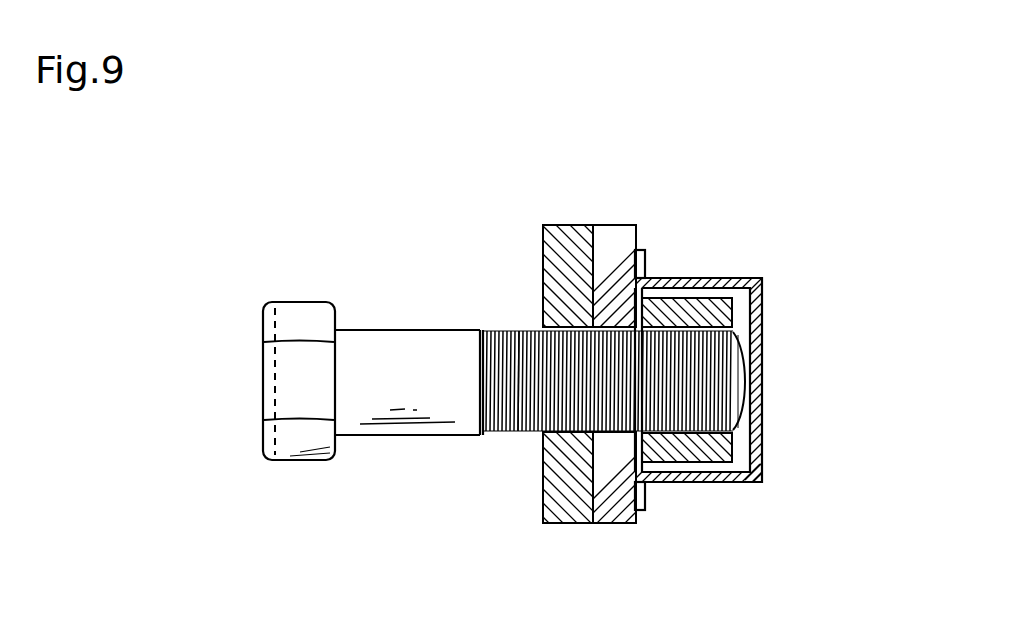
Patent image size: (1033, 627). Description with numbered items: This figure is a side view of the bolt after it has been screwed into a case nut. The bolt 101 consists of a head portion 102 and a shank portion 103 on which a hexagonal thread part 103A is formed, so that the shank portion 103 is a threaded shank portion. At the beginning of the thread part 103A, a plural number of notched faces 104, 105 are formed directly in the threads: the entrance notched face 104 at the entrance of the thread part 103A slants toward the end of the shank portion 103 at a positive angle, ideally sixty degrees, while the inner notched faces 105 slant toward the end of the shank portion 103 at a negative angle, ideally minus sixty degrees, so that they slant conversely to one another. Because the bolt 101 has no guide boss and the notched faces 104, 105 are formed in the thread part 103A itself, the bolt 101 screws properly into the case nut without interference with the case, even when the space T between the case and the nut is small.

The bolt 101 is at (468, 334).
The head portion 102 is at (294, 302).
The shank portion 103 is at (502, 331).
The thread part 103A is at (517, 331).
The entrance notched face 104 is at (763, 447).
The inner notched face 105 is at (733, 350).
The space T is at (743, 312).